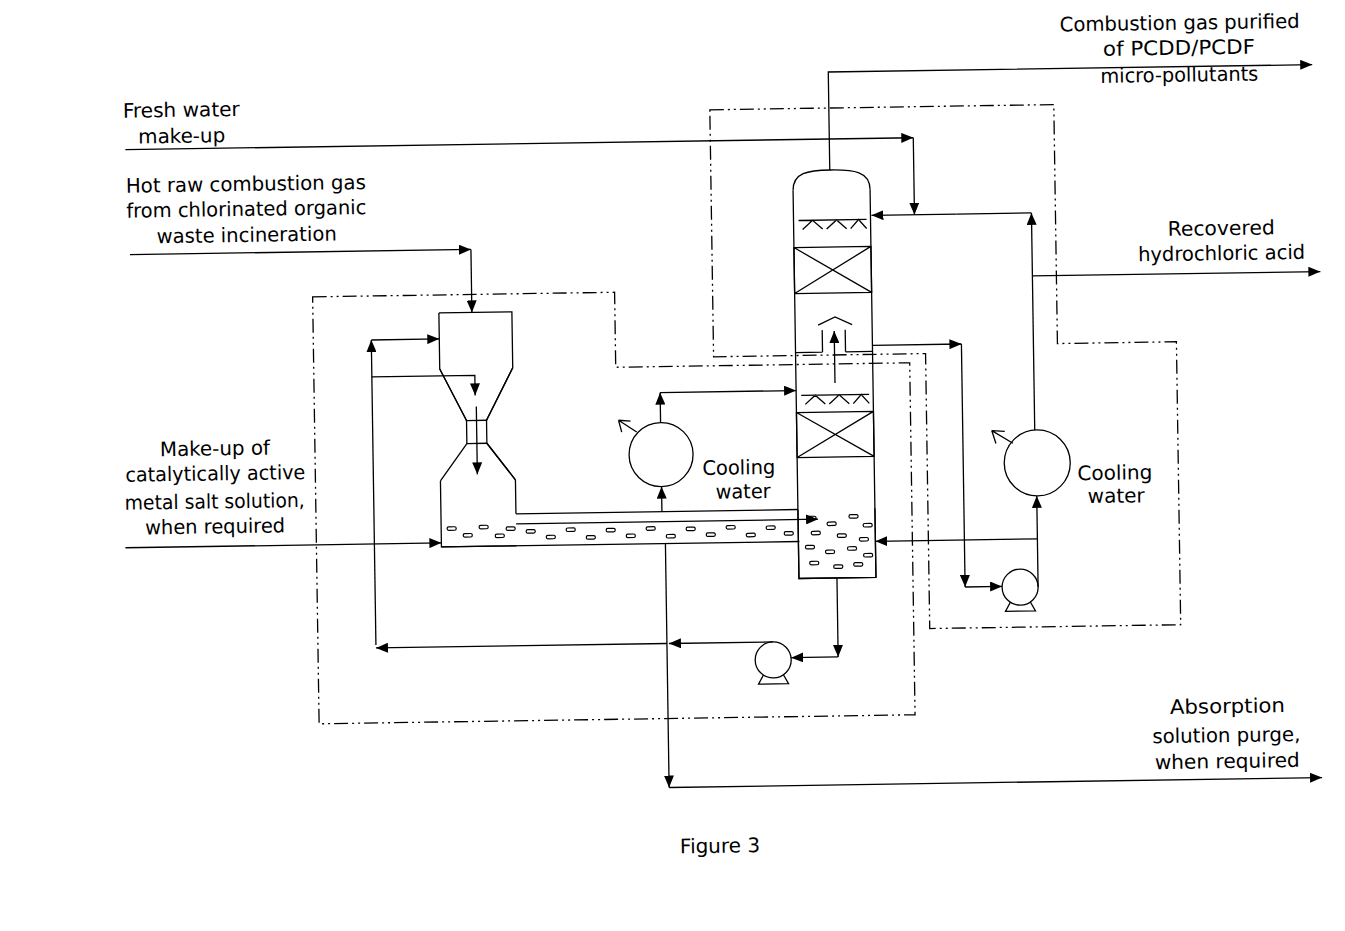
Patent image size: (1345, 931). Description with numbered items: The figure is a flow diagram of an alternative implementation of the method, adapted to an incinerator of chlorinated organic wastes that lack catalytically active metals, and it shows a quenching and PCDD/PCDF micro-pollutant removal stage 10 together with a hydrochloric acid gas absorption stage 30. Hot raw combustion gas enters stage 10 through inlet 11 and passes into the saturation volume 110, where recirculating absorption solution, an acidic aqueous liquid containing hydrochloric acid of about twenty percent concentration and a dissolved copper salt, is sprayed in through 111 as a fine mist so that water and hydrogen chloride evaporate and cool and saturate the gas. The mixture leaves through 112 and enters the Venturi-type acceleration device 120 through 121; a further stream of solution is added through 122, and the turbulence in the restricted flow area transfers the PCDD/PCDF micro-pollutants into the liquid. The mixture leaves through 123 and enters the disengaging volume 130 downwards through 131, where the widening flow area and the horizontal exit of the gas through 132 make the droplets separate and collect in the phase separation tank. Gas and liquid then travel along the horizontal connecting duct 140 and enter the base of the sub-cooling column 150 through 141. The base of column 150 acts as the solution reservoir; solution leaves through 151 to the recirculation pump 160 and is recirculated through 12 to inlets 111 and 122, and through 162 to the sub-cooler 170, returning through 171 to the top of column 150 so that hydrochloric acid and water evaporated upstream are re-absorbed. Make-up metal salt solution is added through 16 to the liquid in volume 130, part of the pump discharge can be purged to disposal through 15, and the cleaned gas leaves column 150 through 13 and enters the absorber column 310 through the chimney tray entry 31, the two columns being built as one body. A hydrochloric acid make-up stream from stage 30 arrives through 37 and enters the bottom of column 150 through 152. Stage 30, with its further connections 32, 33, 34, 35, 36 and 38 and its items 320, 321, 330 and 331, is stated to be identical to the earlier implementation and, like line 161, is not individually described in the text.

The quenching and PCDD/PCDF micro-pollutant removal stage 10 is at (522, 292).
The hot raw combustion gas inlet 11 is at (443, 246).
The absorption solution recirculation line 12 is at (373, 408).
The sub-cooling column gas outlet 13 is at (834, 370).
The purge line 15 is at (773, 789).
The make-up solution inlet 16 is at (236, 541).
The hydrochloric acid gas absorption stage 30 is at (715, 262).
The chimney tray gas entry 31 is at (849, 355).
The absorption liquid inlet 32 is at (892, 220).
The purified combustion gas outlet line 33 is at (911, 75).
The absorption liquid draw-off line 34 is at (922, 348).
The absorption liquid recycle line 35 is at (959, 218).
The recovered hydrochloric acid outlet line 36 is at (1088, 282).
The hydrochloric acid make-up stream line 37 is at (977, 544).
The fresh water make-up line 38 is at (348, 145).
The saturation volume 110 is at (517, 339).
The absorption solution spray inlet 111 is at (429, 331).
The saturation volume outlet 112 is at (471, 412).
The acceleration device 120 is at (462, 428).
The acceleration device inlet 121 is at (488, 417).
The acceleration device solution inlet 122 is at (444, 369).
The acceleration device outlet 123 is at (487, 437).
The disengaging volume 130 is at (444, 491).
The disengaging volume inlet 131 is at (452, 463).
The disengaging volume gas outlet 132 is at (517, 524).
The horizontal connecting duct 140 is at (642, 544).
The sub-cooling column base entry 141 is at (759, 524).
The sub-cooling column 150 is at (793, 421).
The absorption solution outlet 151 is at (835, 600).
The hydrochloric acid make-up inlet 152 is at (893, 565).
The absorption solution recirculation pump 160 is at (754, 664).
The pump discharge line 161 is at (697, 643).
The sub-cooler feed line 162 is at (654, 489).
The sub-cooler 170 is at (682, 425).
The sub-cooler return line 171 is at (741, 393).
The hydrochloric acid absorber column 310 is at (796, 263).
The absorption liquid pump 320 is at (1036, 603).
The pump discharge line 321 is at (1038, 577).
The absorption liquid cooler 330 is at (1070, 463).
The cooler outlet line 331 is at (1038, 415).